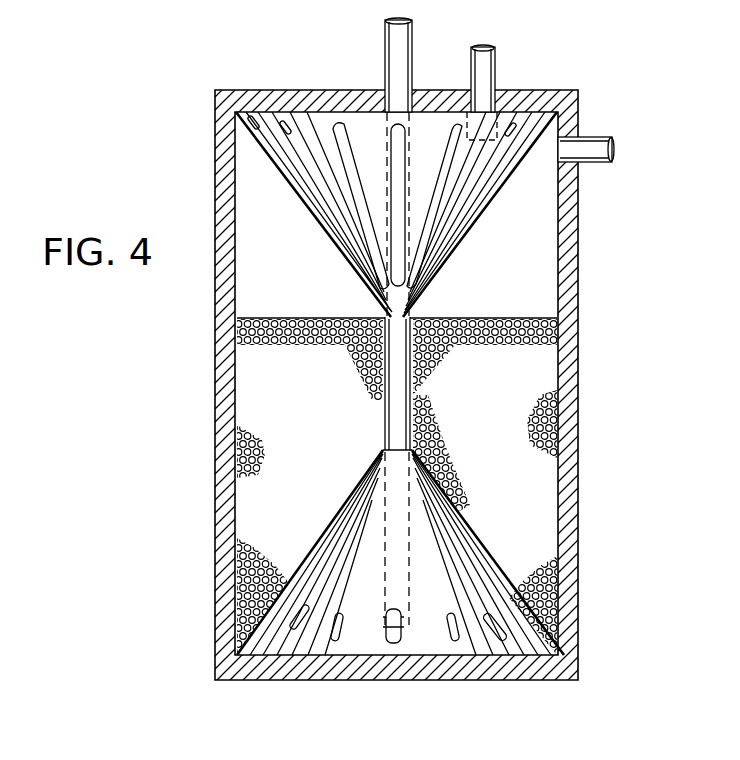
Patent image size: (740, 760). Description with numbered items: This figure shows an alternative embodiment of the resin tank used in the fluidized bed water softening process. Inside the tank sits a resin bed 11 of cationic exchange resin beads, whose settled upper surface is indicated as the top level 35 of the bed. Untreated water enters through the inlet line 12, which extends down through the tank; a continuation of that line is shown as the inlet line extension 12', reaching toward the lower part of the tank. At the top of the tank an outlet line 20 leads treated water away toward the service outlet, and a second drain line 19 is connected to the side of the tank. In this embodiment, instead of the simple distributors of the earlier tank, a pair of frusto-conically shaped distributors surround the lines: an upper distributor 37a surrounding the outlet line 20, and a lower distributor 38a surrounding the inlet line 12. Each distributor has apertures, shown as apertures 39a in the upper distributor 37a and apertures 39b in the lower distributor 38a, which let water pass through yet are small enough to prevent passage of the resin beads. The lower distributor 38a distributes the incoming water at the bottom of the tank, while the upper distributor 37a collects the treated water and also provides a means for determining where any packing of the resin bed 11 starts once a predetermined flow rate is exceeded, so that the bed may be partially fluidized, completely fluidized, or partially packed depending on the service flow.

The resin bed 11 is at (241, 443).
The inlet line 12 is at (365, 163).
The inlet tube extension 12' is at (348, 210).
The second drain line 19 is at (598, 137).
The outlet line 20 is at (497, 62).
The top level of the bed 35 is at (270, 316).
The frusto-conically shaped distributor 37a is at (307, 195).
The frusto-conically shaped distributor 38a is at (310, 630).
The apertures 39a is at (470, 222).
The apertures 39b is at (392, 609).